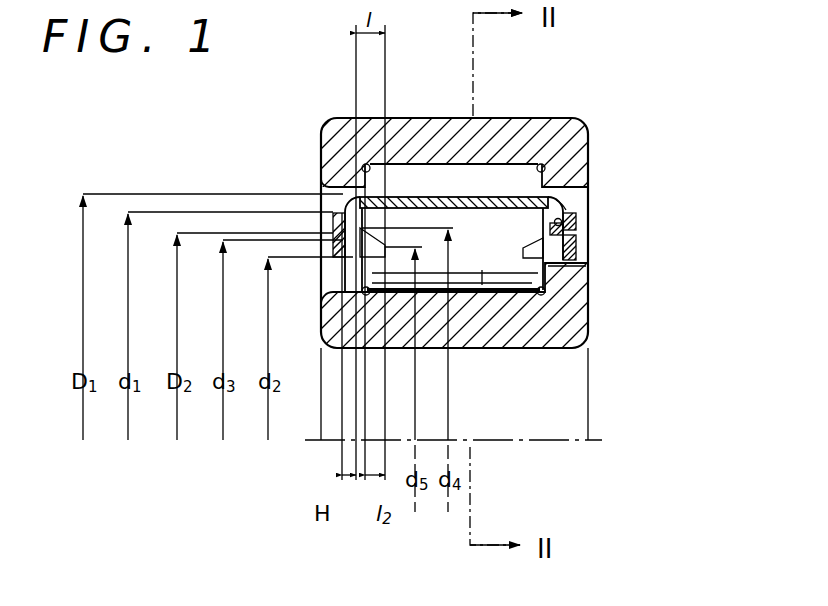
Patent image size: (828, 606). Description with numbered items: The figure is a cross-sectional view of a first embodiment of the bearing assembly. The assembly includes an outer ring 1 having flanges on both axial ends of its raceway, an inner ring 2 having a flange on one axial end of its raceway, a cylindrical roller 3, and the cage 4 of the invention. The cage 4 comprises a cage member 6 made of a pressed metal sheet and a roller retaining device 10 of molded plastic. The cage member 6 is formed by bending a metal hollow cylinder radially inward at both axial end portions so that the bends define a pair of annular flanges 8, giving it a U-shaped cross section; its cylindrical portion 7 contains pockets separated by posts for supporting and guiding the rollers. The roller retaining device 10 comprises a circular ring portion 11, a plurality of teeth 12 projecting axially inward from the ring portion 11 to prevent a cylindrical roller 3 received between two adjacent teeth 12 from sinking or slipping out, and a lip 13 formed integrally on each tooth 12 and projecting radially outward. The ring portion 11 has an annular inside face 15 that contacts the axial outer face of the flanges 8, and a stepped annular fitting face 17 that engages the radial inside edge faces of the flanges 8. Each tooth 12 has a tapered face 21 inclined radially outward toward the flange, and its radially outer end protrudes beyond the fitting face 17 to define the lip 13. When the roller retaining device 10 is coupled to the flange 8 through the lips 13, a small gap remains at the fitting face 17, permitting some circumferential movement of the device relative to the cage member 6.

The outer ring 1 is at (432, 124).
The inner ring 2 is at (578, 327).
The cylindrical roller 3 is at (477, 348).
The cage 4 is at (580, 219).
The cage member 6 is at (481, 190).
The cylindrical portion 7 is at (404, 196).
The annular flanges 8 is at (566, 201).
The roller retaining device 10 is at (580, 258).
The ring portion 11 is at (579, 245).
The teeth 12 is at (518, 348).
The lip 13 is at (546, 196).
The annular inside face 15 is at (579, 228).
The annular fitting face 17 is at (550, 348).
The tapered face 21 is at (524, 237).